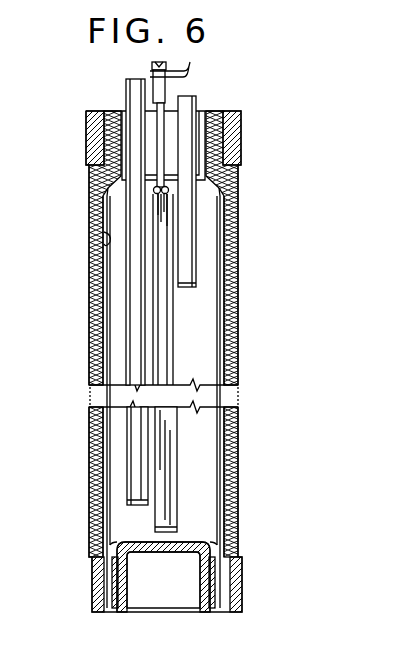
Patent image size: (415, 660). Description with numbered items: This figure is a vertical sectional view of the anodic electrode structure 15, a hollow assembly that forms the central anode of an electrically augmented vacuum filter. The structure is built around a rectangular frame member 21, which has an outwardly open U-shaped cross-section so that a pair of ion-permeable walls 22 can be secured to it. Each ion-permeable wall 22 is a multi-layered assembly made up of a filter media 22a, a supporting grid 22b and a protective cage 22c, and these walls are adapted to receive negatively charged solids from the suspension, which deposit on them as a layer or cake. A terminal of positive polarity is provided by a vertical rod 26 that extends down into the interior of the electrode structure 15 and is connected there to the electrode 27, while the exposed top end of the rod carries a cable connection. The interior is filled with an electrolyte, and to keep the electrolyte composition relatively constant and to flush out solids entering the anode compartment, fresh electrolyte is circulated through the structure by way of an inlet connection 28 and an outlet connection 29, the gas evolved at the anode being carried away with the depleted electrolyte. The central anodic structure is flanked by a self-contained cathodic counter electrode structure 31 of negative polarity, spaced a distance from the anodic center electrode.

The anodic electrode structure 15 is at (243, 324).
The rectangular frame member 21 is at (200, 113).
The ion-permeable walls 22 is at (88, 343).
The filter media 22a is at (89, 213).
The supporting grid 22b is at (97, 243).
The protective cage 22c is at (88, 200).
The vertical rod 26 is at (155, 88).
The electrode 27 is at (173, 458).
The inlet connection 28 is at (135, 425).
The outlet connection 29 is at (184, 290).
The cathodic counter electrode structure 31 is at (88, 128).